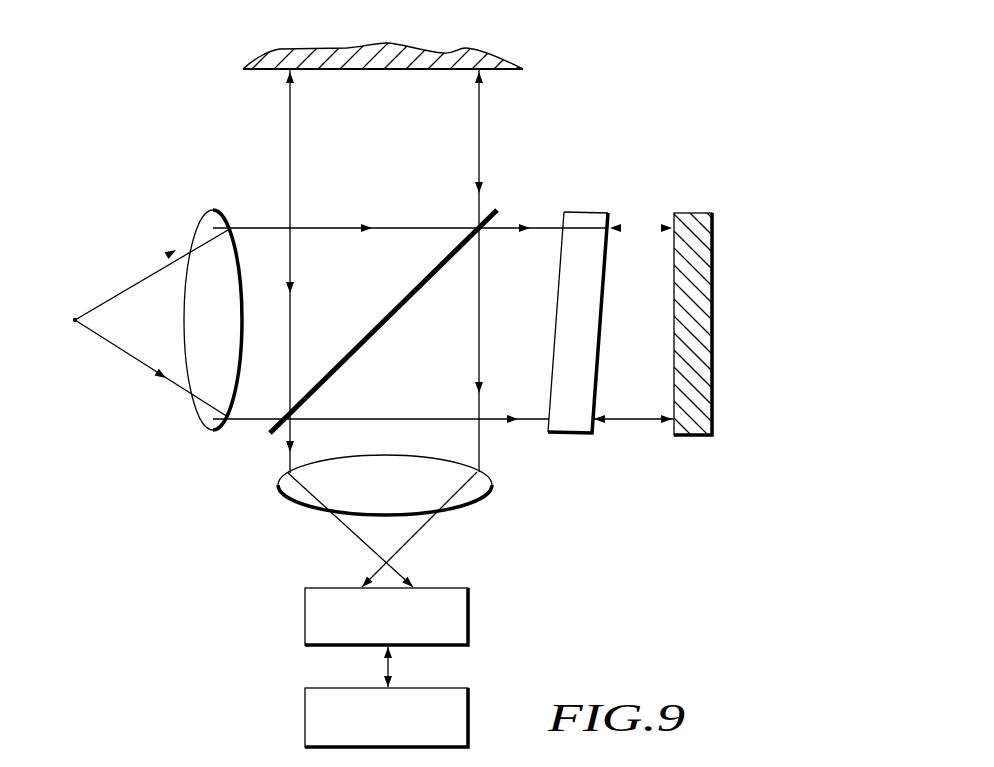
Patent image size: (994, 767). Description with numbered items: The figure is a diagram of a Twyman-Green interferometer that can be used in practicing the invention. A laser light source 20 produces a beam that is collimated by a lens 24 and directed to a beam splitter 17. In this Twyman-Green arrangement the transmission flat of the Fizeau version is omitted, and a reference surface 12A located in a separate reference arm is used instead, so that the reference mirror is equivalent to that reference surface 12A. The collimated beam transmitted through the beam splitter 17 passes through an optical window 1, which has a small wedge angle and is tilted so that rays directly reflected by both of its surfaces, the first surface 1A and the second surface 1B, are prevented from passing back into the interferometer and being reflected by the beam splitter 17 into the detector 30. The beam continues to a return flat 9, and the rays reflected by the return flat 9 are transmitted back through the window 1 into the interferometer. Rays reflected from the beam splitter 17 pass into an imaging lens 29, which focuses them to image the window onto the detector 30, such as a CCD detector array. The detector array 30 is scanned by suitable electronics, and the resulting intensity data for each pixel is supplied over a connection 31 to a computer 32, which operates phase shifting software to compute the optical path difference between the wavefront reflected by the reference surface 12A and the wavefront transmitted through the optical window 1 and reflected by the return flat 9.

The reference surface 12A is at (370, 70).
The laser light source 20 is at (74, 318).
The collimating lens 24 is at (200, 418).
The beam splitter 17 is at (367, 333).
The optical window 1 is at (587, 306).
The first surface of plate 1A is at (559, 278).
The second surface of plate 1B is at (607, 292).
The return flat 9 is at (695, 213).
The imaging lens 29 is at (285, 495).
The detector 30 is at (455, 588).
The signal connection 31 is at (386, 665).
The computer 32 is at (437, 688).